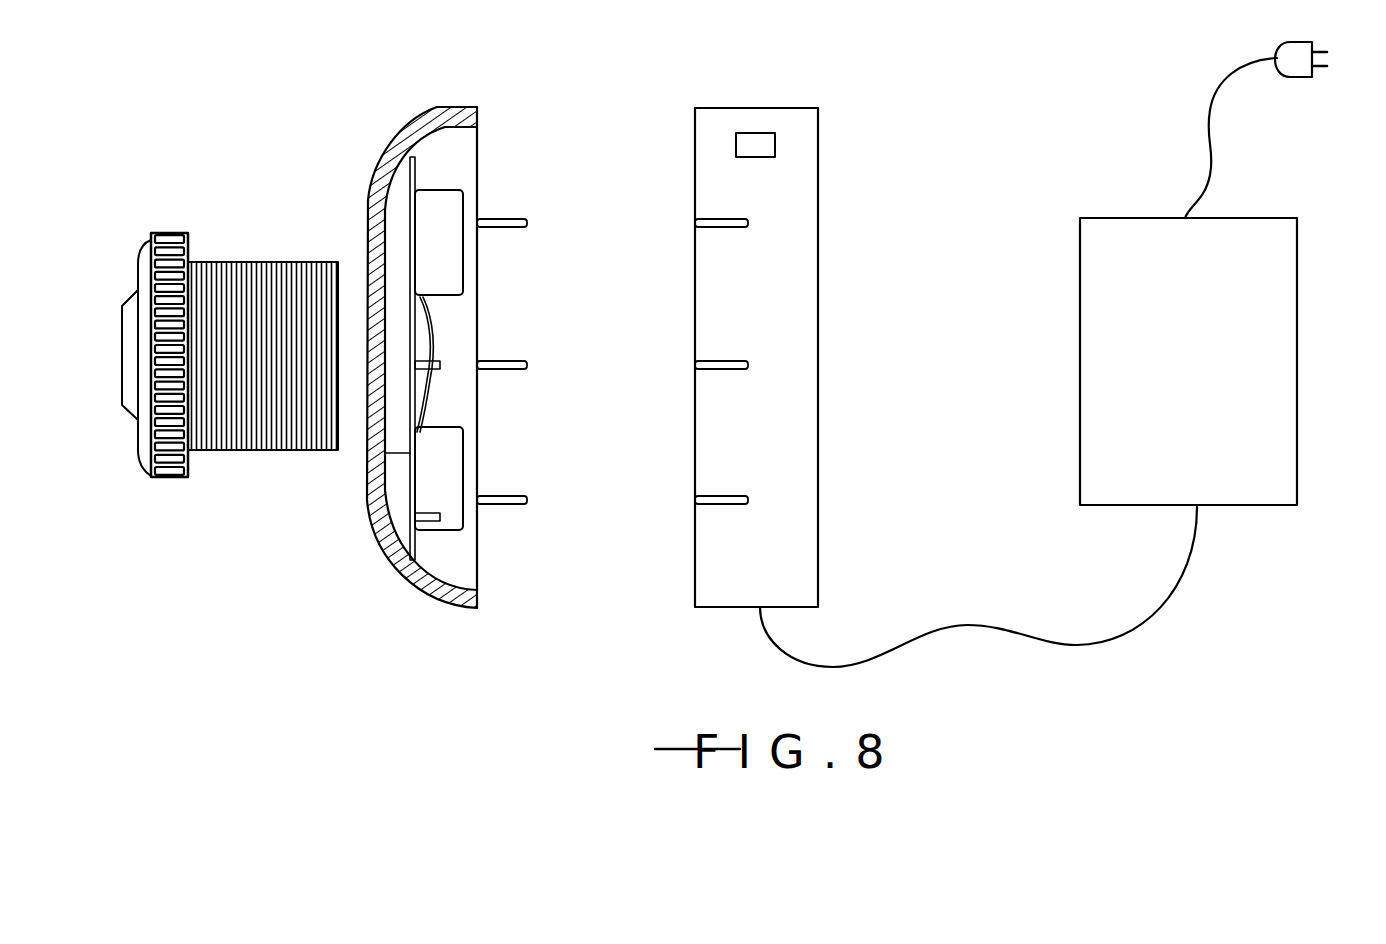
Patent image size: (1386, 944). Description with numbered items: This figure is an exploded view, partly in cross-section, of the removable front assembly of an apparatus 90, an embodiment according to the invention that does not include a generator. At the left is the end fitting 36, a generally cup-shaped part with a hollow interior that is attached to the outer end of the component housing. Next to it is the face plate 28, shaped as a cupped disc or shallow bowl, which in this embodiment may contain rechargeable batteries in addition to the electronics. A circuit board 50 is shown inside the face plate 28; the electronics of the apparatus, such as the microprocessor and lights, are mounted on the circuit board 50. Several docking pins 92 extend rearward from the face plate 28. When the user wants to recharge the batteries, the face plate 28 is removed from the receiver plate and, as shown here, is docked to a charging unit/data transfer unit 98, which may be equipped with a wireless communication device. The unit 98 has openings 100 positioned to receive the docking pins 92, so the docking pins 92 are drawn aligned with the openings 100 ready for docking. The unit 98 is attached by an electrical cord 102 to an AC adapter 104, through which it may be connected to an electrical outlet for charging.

The apparatus 90 is at (318, 160).
The end fitting 36 is at (232, 262).
The face plate 28 is at (427, 112).
The circuit board 50 is at (418, 172).
The docking pins 92 is at (497, 230).
The charging unit/data transfer unit 98 is at (815, 218).
The openings 100 is at (718, 228).
The electrical cord 102 is at (1165, 612).
The AC adapter 104 is at (1297, 327).